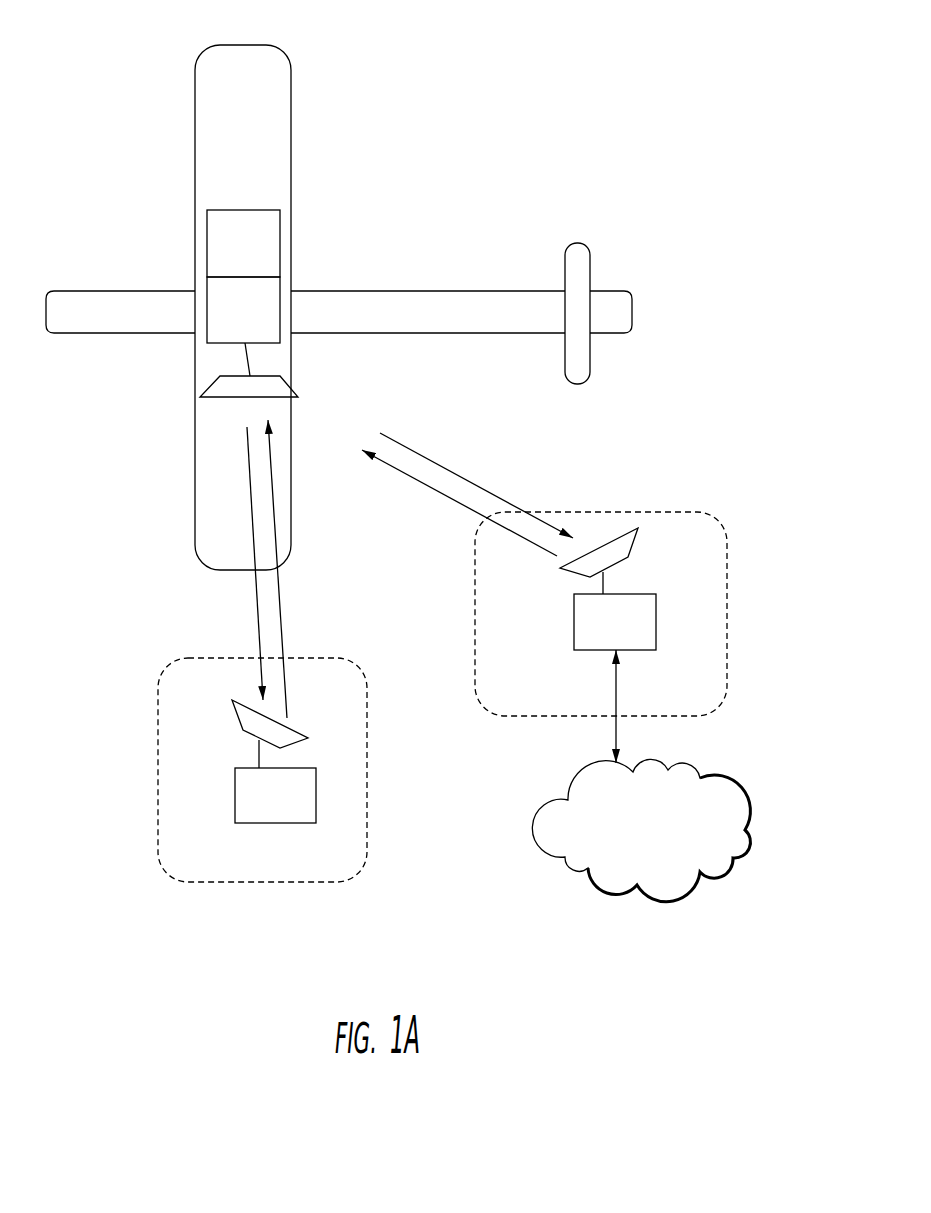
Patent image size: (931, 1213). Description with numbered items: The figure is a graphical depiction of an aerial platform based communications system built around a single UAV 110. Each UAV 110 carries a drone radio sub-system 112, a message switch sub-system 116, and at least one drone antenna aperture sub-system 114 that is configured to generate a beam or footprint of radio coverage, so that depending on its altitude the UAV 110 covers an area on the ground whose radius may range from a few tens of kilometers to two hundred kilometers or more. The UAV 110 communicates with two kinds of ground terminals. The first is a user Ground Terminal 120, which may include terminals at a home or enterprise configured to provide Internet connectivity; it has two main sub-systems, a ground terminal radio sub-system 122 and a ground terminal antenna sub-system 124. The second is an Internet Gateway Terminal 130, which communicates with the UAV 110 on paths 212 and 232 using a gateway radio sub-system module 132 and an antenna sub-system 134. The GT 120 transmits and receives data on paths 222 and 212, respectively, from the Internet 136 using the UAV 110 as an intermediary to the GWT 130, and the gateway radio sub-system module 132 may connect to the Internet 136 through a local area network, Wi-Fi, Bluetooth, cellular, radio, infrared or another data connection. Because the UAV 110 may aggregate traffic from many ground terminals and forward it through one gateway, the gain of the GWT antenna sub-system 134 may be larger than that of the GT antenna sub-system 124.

The UAV 110 is at (195, 140).
The drone radio sub-system 112 is at (210, 343).
The drone antenna aperture sub-system 114 is at (298, 397).
The message switch sub-system 116 is at (253, 210).
The user Ground Terminal (GT) 120 is at (207, 882).
The ground terminal radio sub-system 122 is at (290, 823).
The ground terminal antenna sub-system 124 is at (237, 723).
The Internet Gateway Terminal (GWT) 130 is at (683, 512).
The gateway radio sub-system module 132 is at (656, 623).
The GWT antenna sub-system 134 is at (567, 563).
The Internet 136 is at (745, 855).
The path 212 is at (393, 563).
The path 222 is at (294, 569).
The path 232 is at (459, 503).